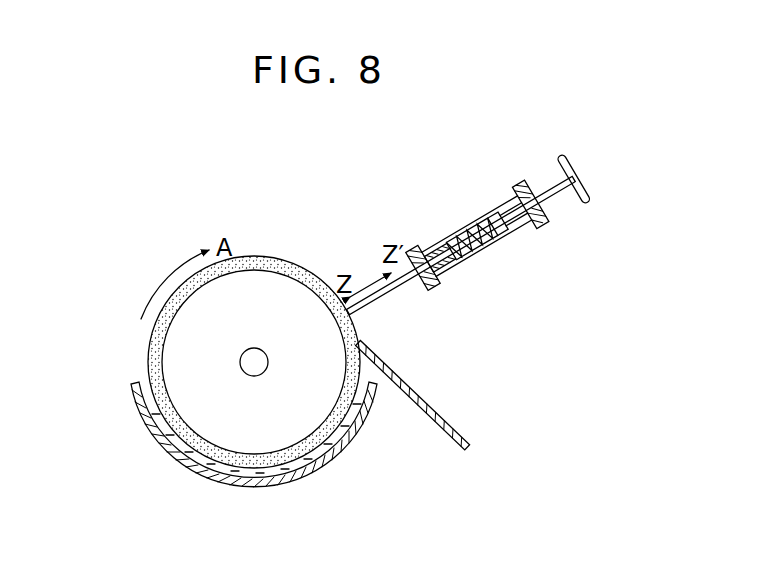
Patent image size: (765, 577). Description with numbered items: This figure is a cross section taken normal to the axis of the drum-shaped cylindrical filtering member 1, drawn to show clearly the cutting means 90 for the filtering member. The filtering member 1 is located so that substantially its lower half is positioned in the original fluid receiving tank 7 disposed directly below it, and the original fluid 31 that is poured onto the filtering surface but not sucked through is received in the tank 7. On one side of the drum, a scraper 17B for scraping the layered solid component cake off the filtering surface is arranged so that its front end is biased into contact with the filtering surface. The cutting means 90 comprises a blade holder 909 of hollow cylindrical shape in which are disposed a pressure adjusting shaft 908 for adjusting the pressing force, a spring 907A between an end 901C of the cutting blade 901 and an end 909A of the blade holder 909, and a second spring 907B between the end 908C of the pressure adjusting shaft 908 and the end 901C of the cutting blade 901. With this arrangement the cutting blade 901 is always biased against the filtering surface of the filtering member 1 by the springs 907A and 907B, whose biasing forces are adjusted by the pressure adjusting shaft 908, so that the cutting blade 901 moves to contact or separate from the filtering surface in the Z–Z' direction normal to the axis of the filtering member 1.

The cylindrical filtering member 1 is at (258, 257).
The original fluid receiving tank 7 is at (183, 466).
The original fluid 31 is at (315, 456).
The scraper 17B is at (451, 428).
The cutting means 90 is at (501, 253).
The cutting blade 901 is at (375, 302).
The end of the cutting blade 901C is at (479, 258).
The spring 907A is at (448, 273).
The spring 907B is at (501, 240).
The pressure adjusting shaft 908 is at (548, 190).
The end of the pressure adjusting shaft 908C is at (513, 224).
The blade holder 909 is at (480, 218).
The end of the blade holder 909A is at (426, 247).